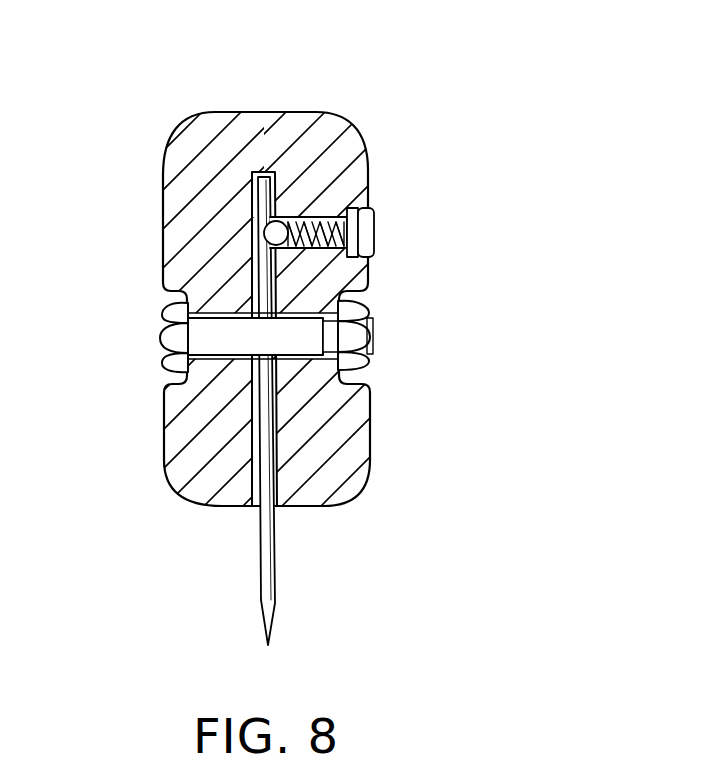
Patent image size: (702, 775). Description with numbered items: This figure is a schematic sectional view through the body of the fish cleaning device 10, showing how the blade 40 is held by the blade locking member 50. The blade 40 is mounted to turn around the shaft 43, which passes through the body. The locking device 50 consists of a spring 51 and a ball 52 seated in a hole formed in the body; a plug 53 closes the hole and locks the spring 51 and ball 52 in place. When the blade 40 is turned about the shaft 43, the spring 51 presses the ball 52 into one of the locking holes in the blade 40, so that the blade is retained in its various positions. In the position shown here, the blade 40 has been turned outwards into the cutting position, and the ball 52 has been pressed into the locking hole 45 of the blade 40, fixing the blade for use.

The fish cleaning device 10 is at (355, 97).
The blade 40 is at (276, 559).
The shaft 43 is at (213, 334).
The locking hole 45 is at (264, 233).
The blade locking member 50 is at (319, 212).
The spring 51 is at (323, 250).
The ball 52 is at (274, 218).
The plug 53 is at (375, 232).